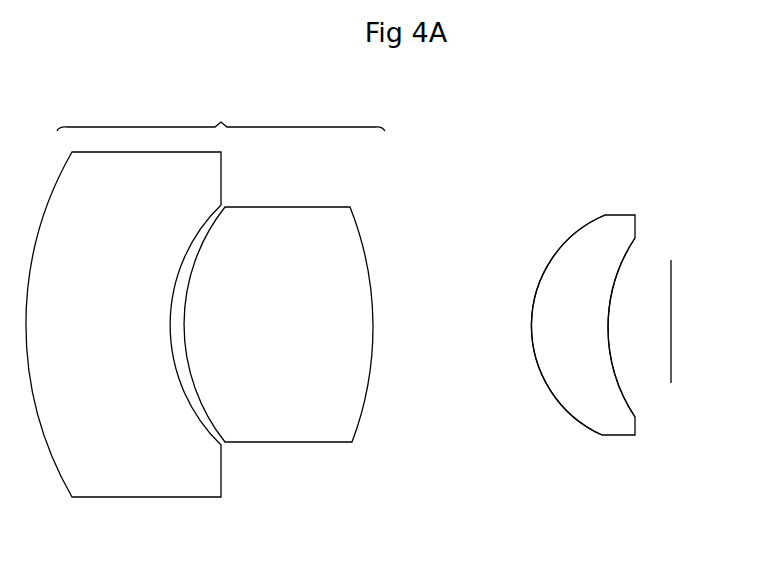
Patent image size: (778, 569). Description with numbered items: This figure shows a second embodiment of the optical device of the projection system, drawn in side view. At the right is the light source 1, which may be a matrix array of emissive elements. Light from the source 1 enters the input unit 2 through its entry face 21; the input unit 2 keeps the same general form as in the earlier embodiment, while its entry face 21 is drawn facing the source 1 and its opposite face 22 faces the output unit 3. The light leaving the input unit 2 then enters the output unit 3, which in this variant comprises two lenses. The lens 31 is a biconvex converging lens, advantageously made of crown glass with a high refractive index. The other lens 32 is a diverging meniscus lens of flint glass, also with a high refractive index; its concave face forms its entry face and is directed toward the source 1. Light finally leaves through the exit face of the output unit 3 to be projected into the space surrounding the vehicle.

The light source 1 is at (671, 295).
The input unit 2 is at (637, 197).
The entry face 21 is at (623, 392).
The convex surface of second lens 22 is at (567, 410).
The output unit 3 is at (221, 108).
The biconvex converging lens 31 is at (302, 433).
The diverging meniscus lens 32 is at (145, 483).